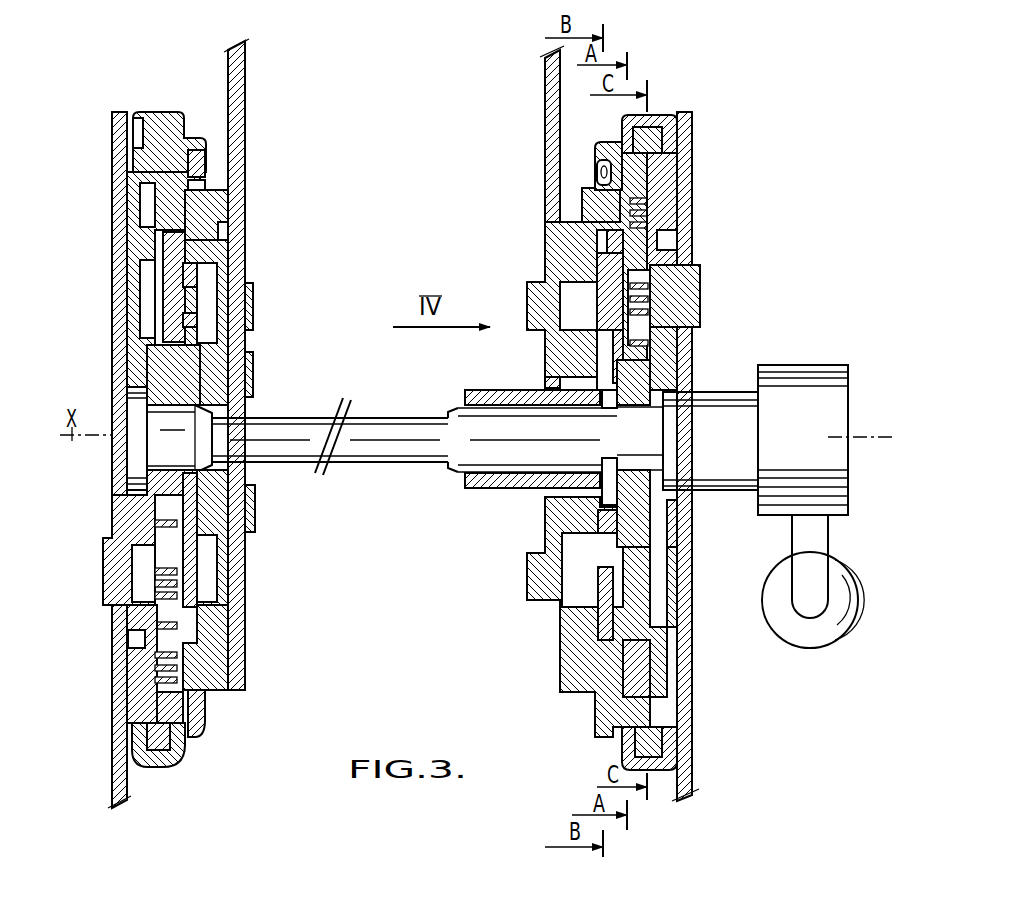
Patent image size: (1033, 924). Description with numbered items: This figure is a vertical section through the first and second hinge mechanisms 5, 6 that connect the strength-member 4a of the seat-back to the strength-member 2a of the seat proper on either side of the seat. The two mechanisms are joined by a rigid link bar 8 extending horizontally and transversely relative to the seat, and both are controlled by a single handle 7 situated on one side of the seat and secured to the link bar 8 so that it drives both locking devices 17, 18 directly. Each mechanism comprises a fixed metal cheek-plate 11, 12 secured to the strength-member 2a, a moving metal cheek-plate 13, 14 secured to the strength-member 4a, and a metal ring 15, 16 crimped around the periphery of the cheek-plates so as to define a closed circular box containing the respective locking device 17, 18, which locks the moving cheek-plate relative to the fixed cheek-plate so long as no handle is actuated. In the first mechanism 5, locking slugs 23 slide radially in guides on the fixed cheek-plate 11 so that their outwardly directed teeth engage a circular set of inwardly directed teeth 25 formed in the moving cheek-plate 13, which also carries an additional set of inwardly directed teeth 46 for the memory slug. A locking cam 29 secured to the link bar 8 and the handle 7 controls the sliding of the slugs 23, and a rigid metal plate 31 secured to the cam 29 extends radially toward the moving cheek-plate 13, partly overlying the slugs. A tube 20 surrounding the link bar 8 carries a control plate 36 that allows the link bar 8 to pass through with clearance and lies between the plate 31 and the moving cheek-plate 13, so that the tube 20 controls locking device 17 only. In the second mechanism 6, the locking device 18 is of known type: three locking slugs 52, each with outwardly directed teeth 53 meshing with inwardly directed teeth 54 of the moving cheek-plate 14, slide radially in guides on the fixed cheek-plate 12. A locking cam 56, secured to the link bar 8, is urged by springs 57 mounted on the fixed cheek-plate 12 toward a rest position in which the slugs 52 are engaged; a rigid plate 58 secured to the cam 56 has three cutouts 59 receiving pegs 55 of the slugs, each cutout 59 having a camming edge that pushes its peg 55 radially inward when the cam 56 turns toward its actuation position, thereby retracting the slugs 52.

The strength-member of the seat proper 2a is at (118, 757).
The strength-member of the seat-back 4a is at (238, 78).
The first hinge mechanism 5 is at (700, 135).
The second hinge mechanism 6 is at (152, 98).
The handle 7 is at (795, 628).
The link bar 8 is at (397, 435).
The fixed cheek-plate 11 is at (685, 297).
The fixed cheek-plate 12 is at (112, 198).
The moving cheek-plate 13 is at (547, 570).
The moving cheek-plate 14 is at (202, 203).
The metal ring 15 is at (660, 115).
The metal ring 16 is at (160, 112).
The locking device 17 is at (587, 580).
The locking device 18 is at (173, 613).
The tube 20 is at (488, 393).
The locking slug 23 is at (640, 667).
The inwardly directed teeth 25 is at (620, 173).
The locking cam 29 is at (640, 513).
The rigid metal plate 31 is at (610, 327).
The control plate 36 is at (595, 497).
The additional inwardly directed teeth 46 is at (602, 208).
The locking slug 52 is at (157, 277).
The outwardly directed teeth 53 is at (163, 188).
The inwardly directed teeth 54 is at (204, 733).
The peg 55 is at (188, 300).
The locking cam 56 is at (167, 367).
The springs 57 is at (155, 585).
The rigid plate 58 is at (193, 273).
The cutout 59 is at (193, 320).